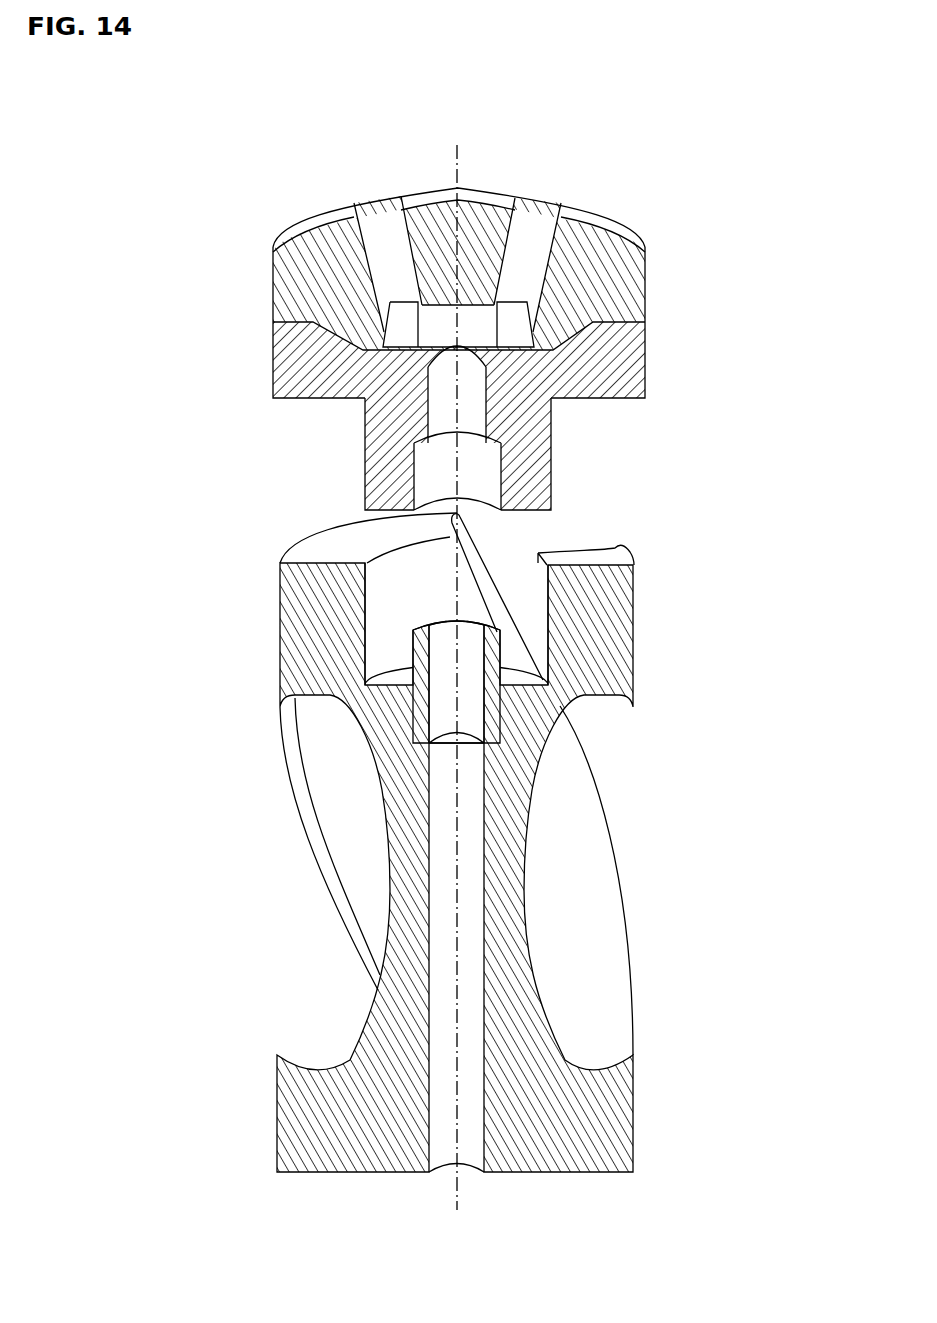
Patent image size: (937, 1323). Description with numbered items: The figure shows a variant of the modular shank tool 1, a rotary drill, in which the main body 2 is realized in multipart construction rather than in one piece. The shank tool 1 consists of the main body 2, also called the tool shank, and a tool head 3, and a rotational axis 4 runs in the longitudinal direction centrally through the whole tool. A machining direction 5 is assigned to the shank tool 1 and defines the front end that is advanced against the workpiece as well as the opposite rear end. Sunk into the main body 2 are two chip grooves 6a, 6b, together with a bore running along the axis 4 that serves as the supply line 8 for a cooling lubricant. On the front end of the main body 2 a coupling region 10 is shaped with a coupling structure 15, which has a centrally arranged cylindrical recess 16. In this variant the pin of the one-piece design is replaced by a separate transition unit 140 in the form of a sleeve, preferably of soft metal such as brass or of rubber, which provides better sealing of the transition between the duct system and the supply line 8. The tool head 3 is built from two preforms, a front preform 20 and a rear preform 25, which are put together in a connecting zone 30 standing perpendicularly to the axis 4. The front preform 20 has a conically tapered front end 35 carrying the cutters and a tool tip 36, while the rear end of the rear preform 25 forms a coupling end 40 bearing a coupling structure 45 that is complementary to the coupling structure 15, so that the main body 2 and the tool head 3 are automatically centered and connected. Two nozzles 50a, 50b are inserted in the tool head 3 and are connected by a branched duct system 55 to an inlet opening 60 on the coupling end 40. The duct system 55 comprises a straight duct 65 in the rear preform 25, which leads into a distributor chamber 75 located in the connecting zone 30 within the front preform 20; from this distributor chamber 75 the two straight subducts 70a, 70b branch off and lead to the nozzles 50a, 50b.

The shank tool 1 is at (760, 115).
The main body 2 is at (635, 598).
The tool head 3 is at (613, 223).
The axis 4 is at (460, 177).
The machining direction 5 is at (87, 492).
The chip groove 6a is at (352, 842).
The chip groove 6b is at (570, 828).
The supply line 8 is at (465, 1153).
The coupling region 10 is at (606, 530).
The coupling structure 15 is at (388, 590).
The cylindrical recess 16 is at (390, 648).
The front preform 20 is at (645, 275).
The rear preform 25 is at (645, 373).
The connecting zone 30 is at (605, 325).
The front end 35 is at (503, 160).
The tool tip 36 is at (457, 186).
The coupling end 40 is at (312, 498).
The coupling structure 45 is at (552, 465).
The nozzle 50a is at (367, 225).
The nozzle 50b is at (545, 232).
The branched duct system 55 is at (445, 365).
The inlet opening 60 is at (445, 468).
The straight duct 65 is at (443, 407).
The straight subduct 70a is at (366, 200).
The straight subduct 70b is at (560, 220).
The distributor chamber 75 is at (440, 328).
The transition unit 140 is at (505, 634).